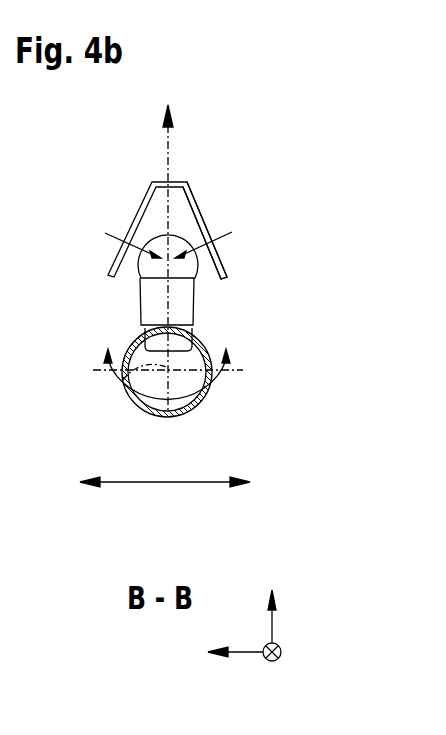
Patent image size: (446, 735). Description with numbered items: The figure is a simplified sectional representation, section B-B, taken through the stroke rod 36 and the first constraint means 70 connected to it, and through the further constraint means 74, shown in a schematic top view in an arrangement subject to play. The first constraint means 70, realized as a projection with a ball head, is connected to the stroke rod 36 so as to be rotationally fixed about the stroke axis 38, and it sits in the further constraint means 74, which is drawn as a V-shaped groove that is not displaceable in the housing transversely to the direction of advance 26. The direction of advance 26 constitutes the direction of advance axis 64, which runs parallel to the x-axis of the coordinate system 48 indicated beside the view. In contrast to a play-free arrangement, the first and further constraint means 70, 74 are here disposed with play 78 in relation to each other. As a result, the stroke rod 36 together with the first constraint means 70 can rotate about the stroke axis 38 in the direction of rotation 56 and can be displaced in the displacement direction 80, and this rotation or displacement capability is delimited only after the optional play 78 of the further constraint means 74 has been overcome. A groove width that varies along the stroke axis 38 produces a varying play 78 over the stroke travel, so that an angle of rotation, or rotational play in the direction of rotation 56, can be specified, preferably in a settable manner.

The direction of advance 26 is at (177, 152).
The direction of advance axis 64 is at (143, 197).
The further constraint means 74 is at (200, 207).
The play 78 is at (130, 252).
The first constraint means 70 is at (190, 292).
The stroke rod 36 is at (145, 333).
The stroke axis 38 is at (106, 384).
The direction of rotation 56 is at (210, 420).
The displacement direction 80 is at (165, 484).
The coordinate system 48 is at (282, 652).